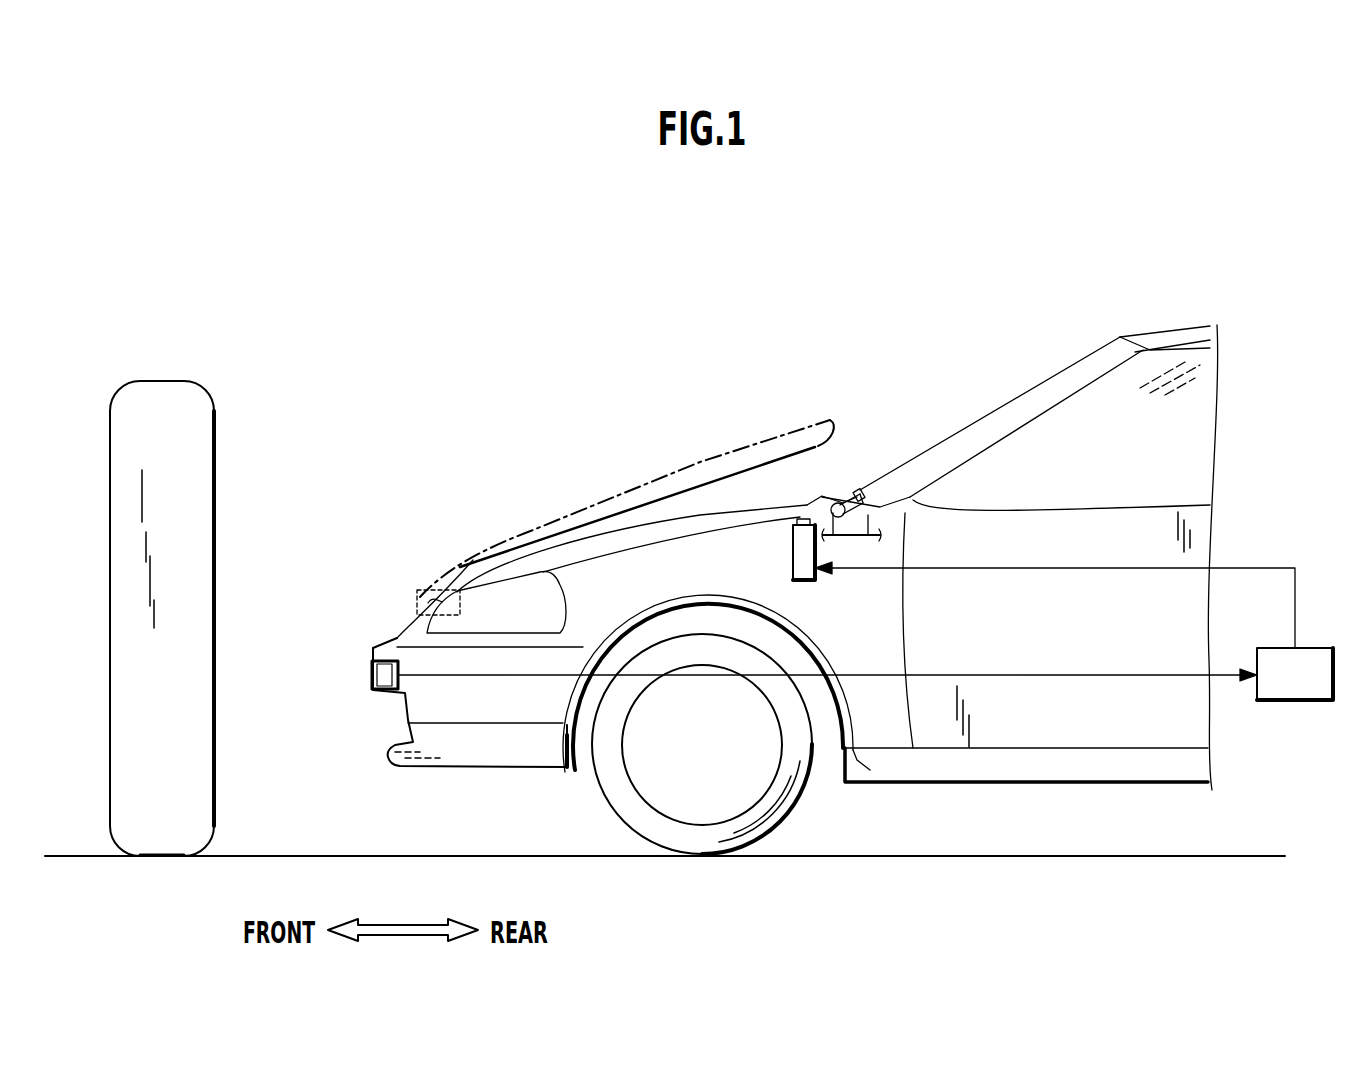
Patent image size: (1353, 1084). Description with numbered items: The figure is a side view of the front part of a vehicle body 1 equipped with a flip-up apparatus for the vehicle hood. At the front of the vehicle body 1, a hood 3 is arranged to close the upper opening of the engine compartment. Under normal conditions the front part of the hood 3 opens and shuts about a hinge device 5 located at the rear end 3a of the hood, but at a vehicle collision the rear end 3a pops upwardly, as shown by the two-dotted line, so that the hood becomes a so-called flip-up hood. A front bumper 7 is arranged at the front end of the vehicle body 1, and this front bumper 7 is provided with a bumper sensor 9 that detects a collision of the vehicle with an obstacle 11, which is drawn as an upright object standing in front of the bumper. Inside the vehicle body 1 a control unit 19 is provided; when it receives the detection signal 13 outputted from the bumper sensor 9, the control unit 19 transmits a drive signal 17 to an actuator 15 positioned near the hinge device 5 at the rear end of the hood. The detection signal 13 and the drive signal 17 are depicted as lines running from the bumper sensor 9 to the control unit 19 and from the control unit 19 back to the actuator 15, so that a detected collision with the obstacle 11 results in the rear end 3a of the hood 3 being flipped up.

The vehicle body 1 is at (1165, 323).
The hood 3 is at (530, 545).
The rear end of the hood 3a is at (803, 505).
The hinge device 5 is at (858, 492).
The front bumper 7 is at (380, 633).
The bumper sensor 9 is at (385, 703).
The obstacle 11 is at (170, 381).
The detection signal 13 is at (1045, 675).
The actuator 15 is at (792, 550).
The drive signal 17 is at (1115, 568).
The control unit 19 is at (1295, 702).